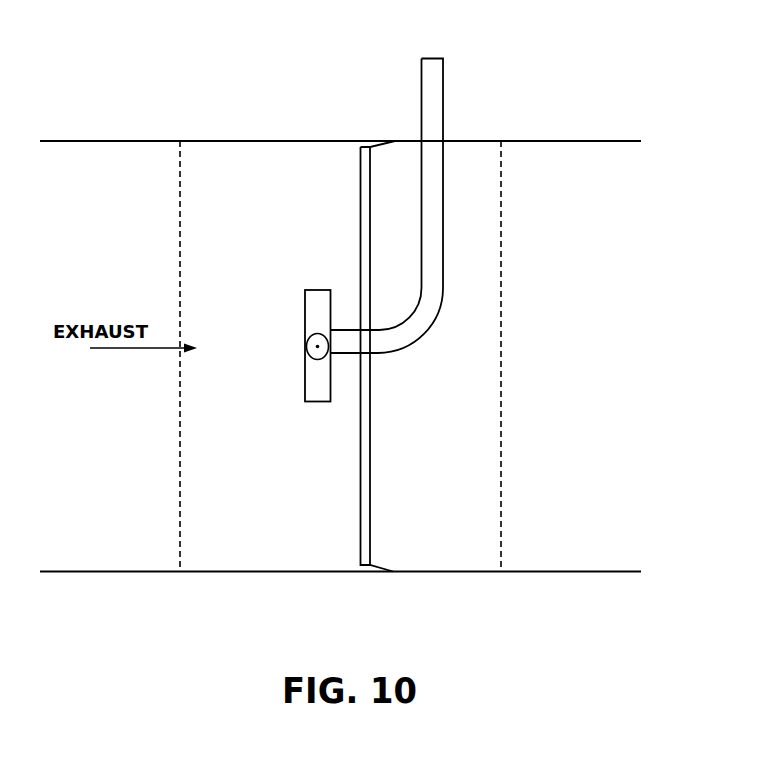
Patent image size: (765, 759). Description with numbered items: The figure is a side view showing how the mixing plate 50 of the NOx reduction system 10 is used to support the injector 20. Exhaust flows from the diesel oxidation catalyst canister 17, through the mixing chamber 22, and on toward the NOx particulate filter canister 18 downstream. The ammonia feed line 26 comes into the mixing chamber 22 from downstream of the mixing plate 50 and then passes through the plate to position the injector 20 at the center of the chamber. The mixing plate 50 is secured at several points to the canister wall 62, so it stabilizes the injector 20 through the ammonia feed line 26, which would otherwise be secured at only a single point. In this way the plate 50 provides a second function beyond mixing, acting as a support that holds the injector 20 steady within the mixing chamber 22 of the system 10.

The NOx reduction system 10 is at (341, 78).
The diesel oxidation catalyst canister 17 is at (107, 421).
The NOx particulate filter canister 18 is at (644, 392).
The injector 20 is at (311, 392).
The mixing chamber 22 is at (254, 252).
The ammonia feed line 26 is at (433, 136).
The mixing plate 50 is at (365, 460).
The canister wall 62 is at (290, 572).